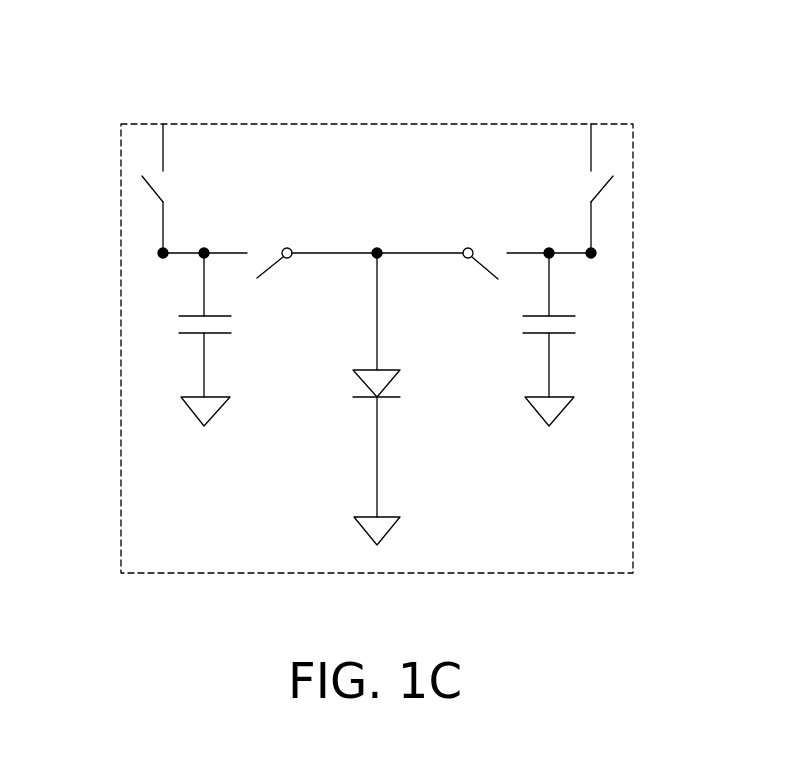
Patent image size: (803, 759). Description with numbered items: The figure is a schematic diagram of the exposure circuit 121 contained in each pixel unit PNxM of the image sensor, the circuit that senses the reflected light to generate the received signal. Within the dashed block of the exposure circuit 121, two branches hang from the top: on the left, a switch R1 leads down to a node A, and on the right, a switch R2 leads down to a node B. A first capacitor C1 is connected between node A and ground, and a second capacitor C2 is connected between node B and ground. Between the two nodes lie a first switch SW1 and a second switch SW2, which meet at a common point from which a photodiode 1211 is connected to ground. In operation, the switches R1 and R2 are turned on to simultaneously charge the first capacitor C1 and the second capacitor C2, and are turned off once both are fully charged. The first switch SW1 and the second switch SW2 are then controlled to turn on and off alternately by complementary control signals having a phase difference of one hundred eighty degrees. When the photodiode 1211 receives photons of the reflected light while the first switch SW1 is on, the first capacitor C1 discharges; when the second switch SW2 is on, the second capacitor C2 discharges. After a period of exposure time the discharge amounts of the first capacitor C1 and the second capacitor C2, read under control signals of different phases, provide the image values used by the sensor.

The exposure circuit 121 is at (607, 90).
The pixel unit PNxM is at (140, 123).
The switch R1 is at (170, 187).
The switch R2 is at (587, 182).
The node A is at (206, 249).
The node B is at (547, 248).
The first switch SW1 is at (268, 248).
The second switch SW2 is at (493, 250).
The first capacitor C1 is at (170, 327).
The second capacitor C2 is at (585, 327).
The photodiode 1211 is at (393, 382).